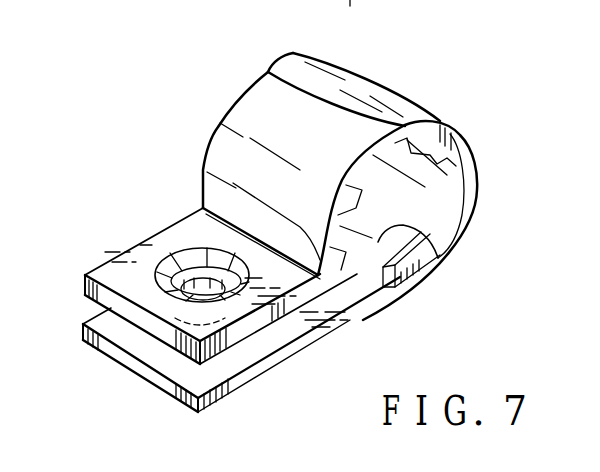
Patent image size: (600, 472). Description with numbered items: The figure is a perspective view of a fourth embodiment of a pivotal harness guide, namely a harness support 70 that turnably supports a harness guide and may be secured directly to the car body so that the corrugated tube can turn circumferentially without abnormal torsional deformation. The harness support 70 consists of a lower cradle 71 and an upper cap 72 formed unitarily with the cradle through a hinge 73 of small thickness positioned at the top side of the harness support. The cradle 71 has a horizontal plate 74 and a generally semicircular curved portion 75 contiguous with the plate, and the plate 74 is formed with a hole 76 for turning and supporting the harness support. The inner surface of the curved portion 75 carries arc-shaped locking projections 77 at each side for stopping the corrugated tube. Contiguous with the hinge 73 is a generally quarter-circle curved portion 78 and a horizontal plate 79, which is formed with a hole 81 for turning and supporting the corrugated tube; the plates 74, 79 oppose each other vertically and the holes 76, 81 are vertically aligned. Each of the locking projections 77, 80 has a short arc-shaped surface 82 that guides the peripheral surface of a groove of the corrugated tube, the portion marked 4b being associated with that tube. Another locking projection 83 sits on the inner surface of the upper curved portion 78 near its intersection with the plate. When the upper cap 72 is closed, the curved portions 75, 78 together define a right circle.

The cable 4b is at (98, 13).
The harness support 70 is at (299, 216).
The lower cradle 71 is at (299, 222).
The upper cap 72 is at (200, 181).
The hinge 73 is at (285, 68).
The horizontal plate 74 is at (285, 357).
The semicircle curved portion 75 is at (478, 182).
The hole 76 is at (247, 378).
The locking projections 77 is at (443, 265).
The quarter-circle curved portion 78 is at (253, 125).
The horizontal plate 79 is at (182, 317).
The locking projection 80 is at (352, 222).
The hole 81 is at (195, 293).
The arc-shaped surface 82 is at (449, 240).
The locking projection 83 is at (357, 275).